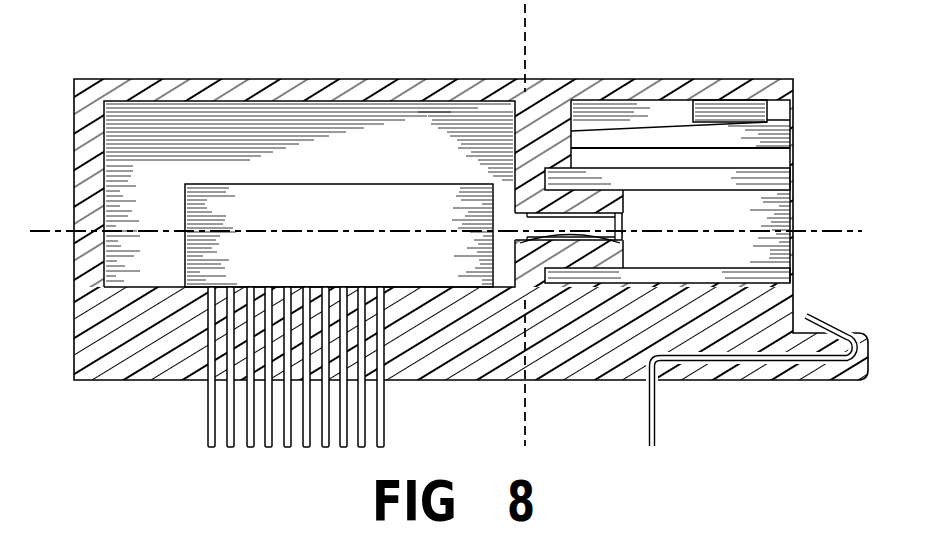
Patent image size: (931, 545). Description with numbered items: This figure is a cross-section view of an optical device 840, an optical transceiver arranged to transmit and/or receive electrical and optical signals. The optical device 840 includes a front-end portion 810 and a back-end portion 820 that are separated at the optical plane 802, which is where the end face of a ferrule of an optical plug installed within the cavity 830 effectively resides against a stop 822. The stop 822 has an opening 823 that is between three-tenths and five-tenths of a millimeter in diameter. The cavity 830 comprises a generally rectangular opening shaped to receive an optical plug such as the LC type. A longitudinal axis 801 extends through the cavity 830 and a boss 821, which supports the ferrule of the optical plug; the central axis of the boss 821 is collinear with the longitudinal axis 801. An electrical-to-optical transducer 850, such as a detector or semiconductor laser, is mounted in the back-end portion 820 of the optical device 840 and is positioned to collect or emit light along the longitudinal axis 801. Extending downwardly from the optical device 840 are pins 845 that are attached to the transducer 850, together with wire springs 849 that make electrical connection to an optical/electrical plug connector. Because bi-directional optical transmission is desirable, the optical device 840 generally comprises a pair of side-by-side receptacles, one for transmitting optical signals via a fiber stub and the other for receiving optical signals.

The optical device 840 is at (103, 40).
The back-end portion 820 is at (313, 78).
The front-end portion 810 is at (636, 78).
The cavity 830 is at (803, 184).
The boss 821 is at (620, 190).
The stop 822 is at (600, 240).
The opening 823 is at (515, 232).
The electrical-to-optical transducer 850 is at (360, 266).
The pins 845 is at (287, 443).
The wire springs 849 is at (815, 318).
The longitudinal axis 801 is at (63, 230).
The optical plane 802 is at (527, 50).